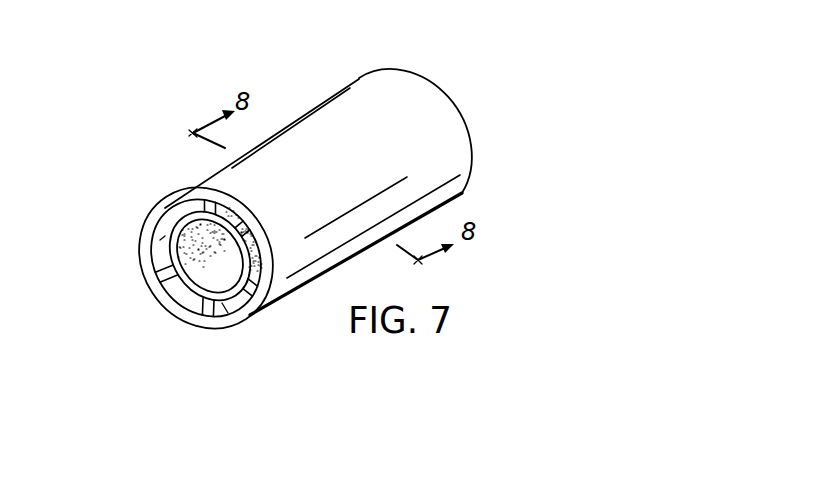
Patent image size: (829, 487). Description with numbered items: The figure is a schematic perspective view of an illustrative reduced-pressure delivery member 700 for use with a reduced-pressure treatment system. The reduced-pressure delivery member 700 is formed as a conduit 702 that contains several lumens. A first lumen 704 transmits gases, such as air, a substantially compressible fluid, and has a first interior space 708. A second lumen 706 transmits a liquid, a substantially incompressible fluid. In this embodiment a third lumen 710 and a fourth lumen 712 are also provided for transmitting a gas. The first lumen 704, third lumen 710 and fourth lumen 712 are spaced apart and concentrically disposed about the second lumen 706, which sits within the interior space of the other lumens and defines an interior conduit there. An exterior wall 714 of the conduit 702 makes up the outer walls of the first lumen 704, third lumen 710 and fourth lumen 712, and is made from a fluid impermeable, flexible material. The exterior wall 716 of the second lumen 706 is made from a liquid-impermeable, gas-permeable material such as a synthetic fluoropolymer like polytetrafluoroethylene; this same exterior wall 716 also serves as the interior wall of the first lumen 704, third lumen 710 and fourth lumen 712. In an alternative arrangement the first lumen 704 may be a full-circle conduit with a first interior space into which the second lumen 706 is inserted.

The reduced-pressure delivery member 700 is at (343, 82).
The conduit 702 is at (307, 112).
The first lumen 704 is at (171, 210).
The second lumen 706 is at (198, 273).
The first interior space 708 is at (165, 227).
The third lumen 710 is at (242, 232).
The fourth lumen 712 is at (227, 310).
The exterior wall 714 is at (410, 78).
The exterior wall of the second lumen 716 is at (208, 320).